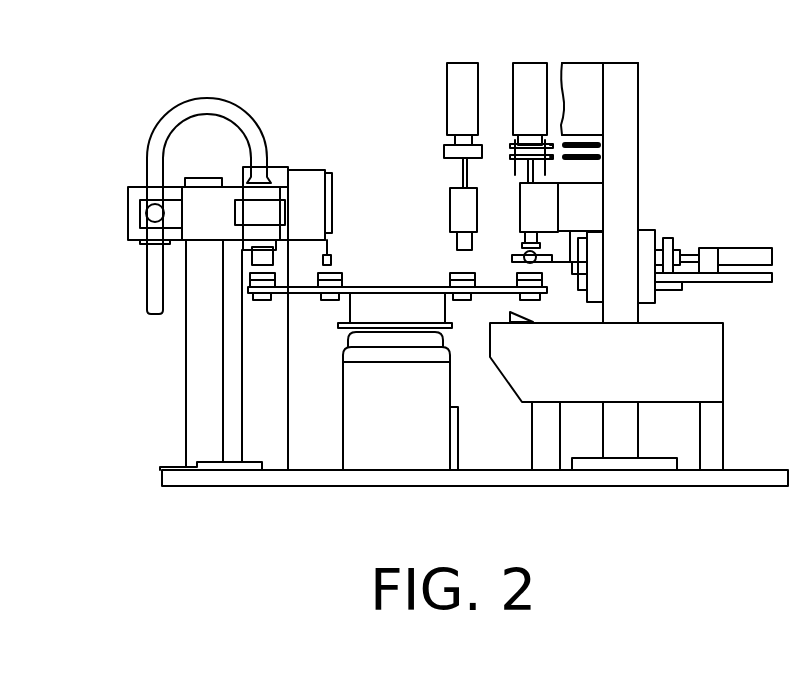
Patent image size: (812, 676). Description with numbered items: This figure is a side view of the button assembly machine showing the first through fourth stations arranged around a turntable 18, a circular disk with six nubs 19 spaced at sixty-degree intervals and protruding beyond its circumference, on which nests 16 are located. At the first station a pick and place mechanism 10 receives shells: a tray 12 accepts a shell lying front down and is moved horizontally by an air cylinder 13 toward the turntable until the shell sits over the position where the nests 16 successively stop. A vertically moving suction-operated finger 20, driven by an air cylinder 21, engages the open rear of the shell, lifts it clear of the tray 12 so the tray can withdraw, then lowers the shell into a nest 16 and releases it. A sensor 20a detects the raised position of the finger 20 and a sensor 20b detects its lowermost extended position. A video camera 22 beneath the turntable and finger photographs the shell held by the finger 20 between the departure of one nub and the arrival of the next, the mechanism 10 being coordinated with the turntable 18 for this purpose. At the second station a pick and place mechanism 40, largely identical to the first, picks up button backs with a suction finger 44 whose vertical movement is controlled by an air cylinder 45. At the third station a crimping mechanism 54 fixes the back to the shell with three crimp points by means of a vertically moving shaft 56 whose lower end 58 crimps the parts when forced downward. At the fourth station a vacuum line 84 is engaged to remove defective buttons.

The pick and place mechanism 10 is at (662, 170).
The tray 12 is at (570, 232).
The air cylinder 13 is at (738, 255).
The nests 16 is at (551, 292).
The turntable 18 is at (393, 290).
The nubs 19 is at (497, 285).
The suction-operated finger 20 is at (523, 247).
The sensor 20a is at (587, 143).
The sensor 20b is at (590, 155).
The air cylinder 21 is at (527, 78).
The video camera 22 is at (698, 378).
The pick and place mechanism 40 is at (438, 134).
The finger 44 is at (465, 243).
The air cylinder 45 is at (463, 78).
The crimping mechanism 54 is at (327, 198).
The shaft 56 is at (331, 248).
The lower end 58 is at (334, 265).
The vacuum line 84 is at (157, 138).